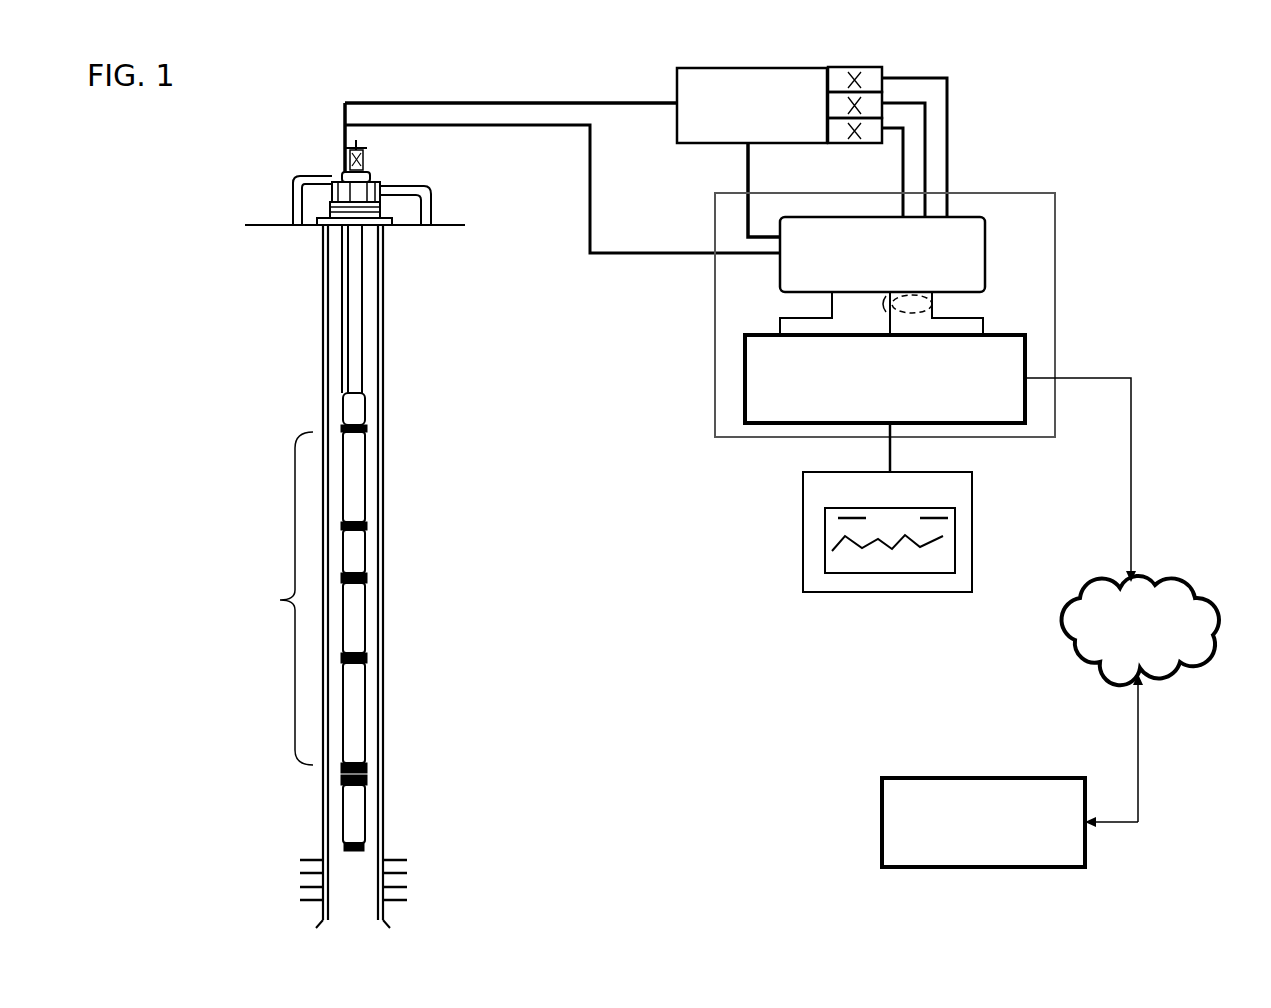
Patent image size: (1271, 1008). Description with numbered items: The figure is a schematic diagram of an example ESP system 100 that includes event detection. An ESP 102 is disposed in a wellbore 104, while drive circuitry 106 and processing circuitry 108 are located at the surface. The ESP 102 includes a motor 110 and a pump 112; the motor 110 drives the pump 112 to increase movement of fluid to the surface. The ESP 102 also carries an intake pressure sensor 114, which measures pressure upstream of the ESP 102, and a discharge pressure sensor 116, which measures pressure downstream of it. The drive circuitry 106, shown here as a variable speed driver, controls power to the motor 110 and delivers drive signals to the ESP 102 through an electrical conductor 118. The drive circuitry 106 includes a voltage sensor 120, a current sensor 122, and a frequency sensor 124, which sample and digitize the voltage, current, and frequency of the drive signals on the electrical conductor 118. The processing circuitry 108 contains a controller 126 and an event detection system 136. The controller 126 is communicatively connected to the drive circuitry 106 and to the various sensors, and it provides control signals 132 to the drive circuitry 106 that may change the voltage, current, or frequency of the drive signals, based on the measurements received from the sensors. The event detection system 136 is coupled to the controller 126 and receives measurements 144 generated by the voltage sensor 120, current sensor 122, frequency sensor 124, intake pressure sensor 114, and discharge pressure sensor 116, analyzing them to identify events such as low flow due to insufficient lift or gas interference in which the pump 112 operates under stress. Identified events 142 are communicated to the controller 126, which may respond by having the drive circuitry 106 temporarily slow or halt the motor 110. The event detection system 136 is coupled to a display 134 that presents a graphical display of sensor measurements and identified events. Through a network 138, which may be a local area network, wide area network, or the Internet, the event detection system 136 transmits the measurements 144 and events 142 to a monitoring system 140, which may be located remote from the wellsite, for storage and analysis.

The ESP system 100 is at (266, 338).
The ESP 102 is at (291, 495).
The wellbore 104 is at (478, 598).
The drive circuitry 106 is at (734, 129).
The processing circuitry 108 is at (985, 190).
The motor 110 is at (357, 718).
The pump 112 is at (357, 498).
The intake pressure sensor 114 is at (357, 805).
The discharge pressure sensor 116 is at (353, 410).
The electrical conductor 118 is at (518, 101).
The voltage sensor 120 is at (843, 67).
The current sensor 122 is at (868, 107).
The frequency sensor 124 is at (868, 133).
The controller 126 is at (962, 258).
The control signals 132 is at (746, 171).
The display 134 is at (806, 504).
The event detection system 136 is at (867, 406).
The network 138 is at (1122, 642).
The monitoring system 140 is at (965, 856).
The events 142 is at (793, 318).
The measurements 144 is at (940, 305).